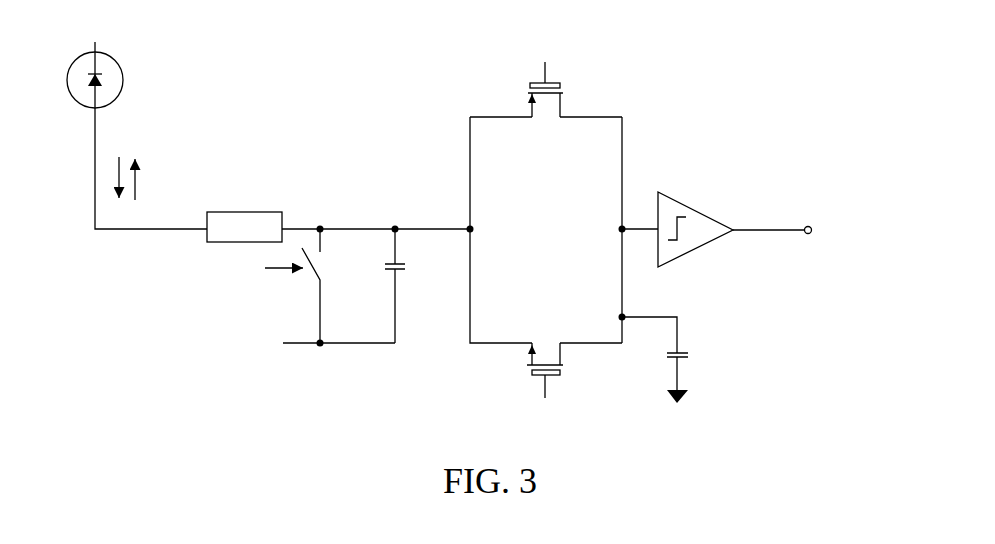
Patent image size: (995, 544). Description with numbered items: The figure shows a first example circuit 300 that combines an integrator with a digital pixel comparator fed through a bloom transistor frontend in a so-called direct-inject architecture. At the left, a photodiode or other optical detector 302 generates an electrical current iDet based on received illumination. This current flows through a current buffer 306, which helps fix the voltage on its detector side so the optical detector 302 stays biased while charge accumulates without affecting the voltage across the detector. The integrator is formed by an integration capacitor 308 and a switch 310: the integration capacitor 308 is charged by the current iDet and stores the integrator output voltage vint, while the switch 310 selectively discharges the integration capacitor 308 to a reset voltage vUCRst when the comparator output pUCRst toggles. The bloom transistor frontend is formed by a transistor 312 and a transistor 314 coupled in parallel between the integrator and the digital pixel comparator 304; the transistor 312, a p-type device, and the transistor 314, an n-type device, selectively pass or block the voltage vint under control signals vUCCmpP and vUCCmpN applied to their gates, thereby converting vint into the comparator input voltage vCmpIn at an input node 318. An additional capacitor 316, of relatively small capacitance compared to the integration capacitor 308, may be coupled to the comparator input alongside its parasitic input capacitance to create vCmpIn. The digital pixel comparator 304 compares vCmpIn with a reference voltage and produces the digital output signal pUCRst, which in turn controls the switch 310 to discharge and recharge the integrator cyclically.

The circuit 300 is at (776, 81).
The optical detector 302 is at (132, 85).
The digital pixel comparator 304 is at (707, 209).
The current buffer 306 is at (244, 208).
The integration capacitor 308 is at (402, 279).
The switch 310 is at (304, 283).
The transistor 312 is at (521, 90).
The transistor 314 is at (571, 363).
The additional capacitor 316 is at (694, 357).
The input node 318 is at (615, 214).